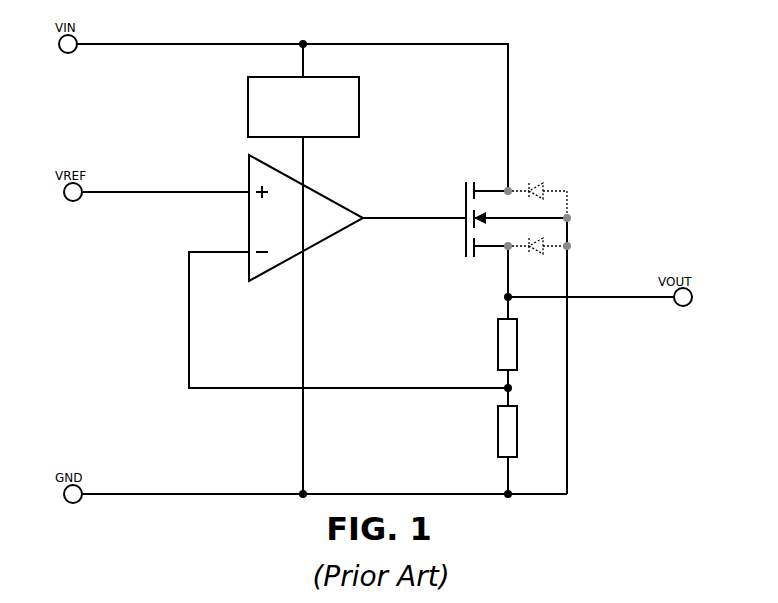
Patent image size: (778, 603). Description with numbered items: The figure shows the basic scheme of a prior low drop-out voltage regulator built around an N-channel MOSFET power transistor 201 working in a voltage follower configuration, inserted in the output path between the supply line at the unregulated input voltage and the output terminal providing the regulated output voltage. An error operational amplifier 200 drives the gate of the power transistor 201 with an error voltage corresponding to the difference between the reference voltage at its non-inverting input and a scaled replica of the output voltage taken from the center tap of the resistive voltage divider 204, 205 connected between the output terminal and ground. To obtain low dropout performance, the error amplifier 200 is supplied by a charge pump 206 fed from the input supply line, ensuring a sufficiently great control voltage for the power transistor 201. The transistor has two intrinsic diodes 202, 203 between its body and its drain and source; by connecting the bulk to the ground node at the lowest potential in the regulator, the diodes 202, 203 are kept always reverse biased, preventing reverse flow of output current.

The error operational amplifier 200 is at (304, 230).
The power transistor 201 is at (496, 222).
The intrinsic diode 202 is at (537, 193).
The intrinsic diode 203 is at (537, 257).
The resistive voltage divider resistor 204 is at (502, 344).
The resistive voltage divider resistor 205 is at (502, 431).
The charge pump 206 is at (303, 98).